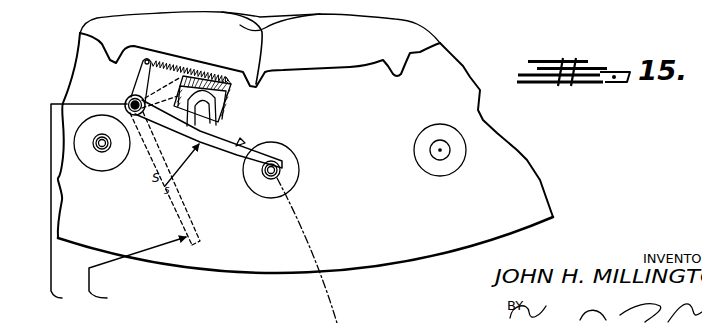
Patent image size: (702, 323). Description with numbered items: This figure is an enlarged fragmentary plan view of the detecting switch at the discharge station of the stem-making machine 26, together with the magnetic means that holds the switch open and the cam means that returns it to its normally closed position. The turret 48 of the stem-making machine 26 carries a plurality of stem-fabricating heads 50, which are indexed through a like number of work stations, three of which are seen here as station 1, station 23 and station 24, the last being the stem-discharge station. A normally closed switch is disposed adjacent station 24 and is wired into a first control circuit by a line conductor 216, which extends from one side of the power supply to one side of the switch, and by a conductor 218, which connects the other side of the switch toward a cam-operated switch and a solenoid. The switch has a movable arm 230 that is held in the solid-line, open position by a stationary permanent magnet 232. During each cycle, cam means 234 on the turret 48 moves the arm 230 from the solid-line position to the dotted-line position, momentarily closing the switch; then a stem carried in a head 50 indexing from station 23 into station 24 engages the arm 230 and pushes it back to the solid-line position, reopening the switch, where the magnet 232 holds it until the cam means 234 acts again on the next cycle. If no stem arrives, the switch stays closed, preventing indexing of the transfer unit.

The stem-making machine 26 is at (518, 148).
The turret 48 is at (528, 224).
The cam means 234 is at (222, 12).
The permanent magnet 232 is at (214, 109).
The movable arm 230 is at (233, 141).
The stem-fabricating head 50 is at (111, 171).
The station "23" 23 is at (94, 165).
The station "24" 24 is at (298, 242).
The station "1" 1 is at (446, 169).
The line conductor 216 is at (83, 213).
The conductor 218 is at (137, 280).